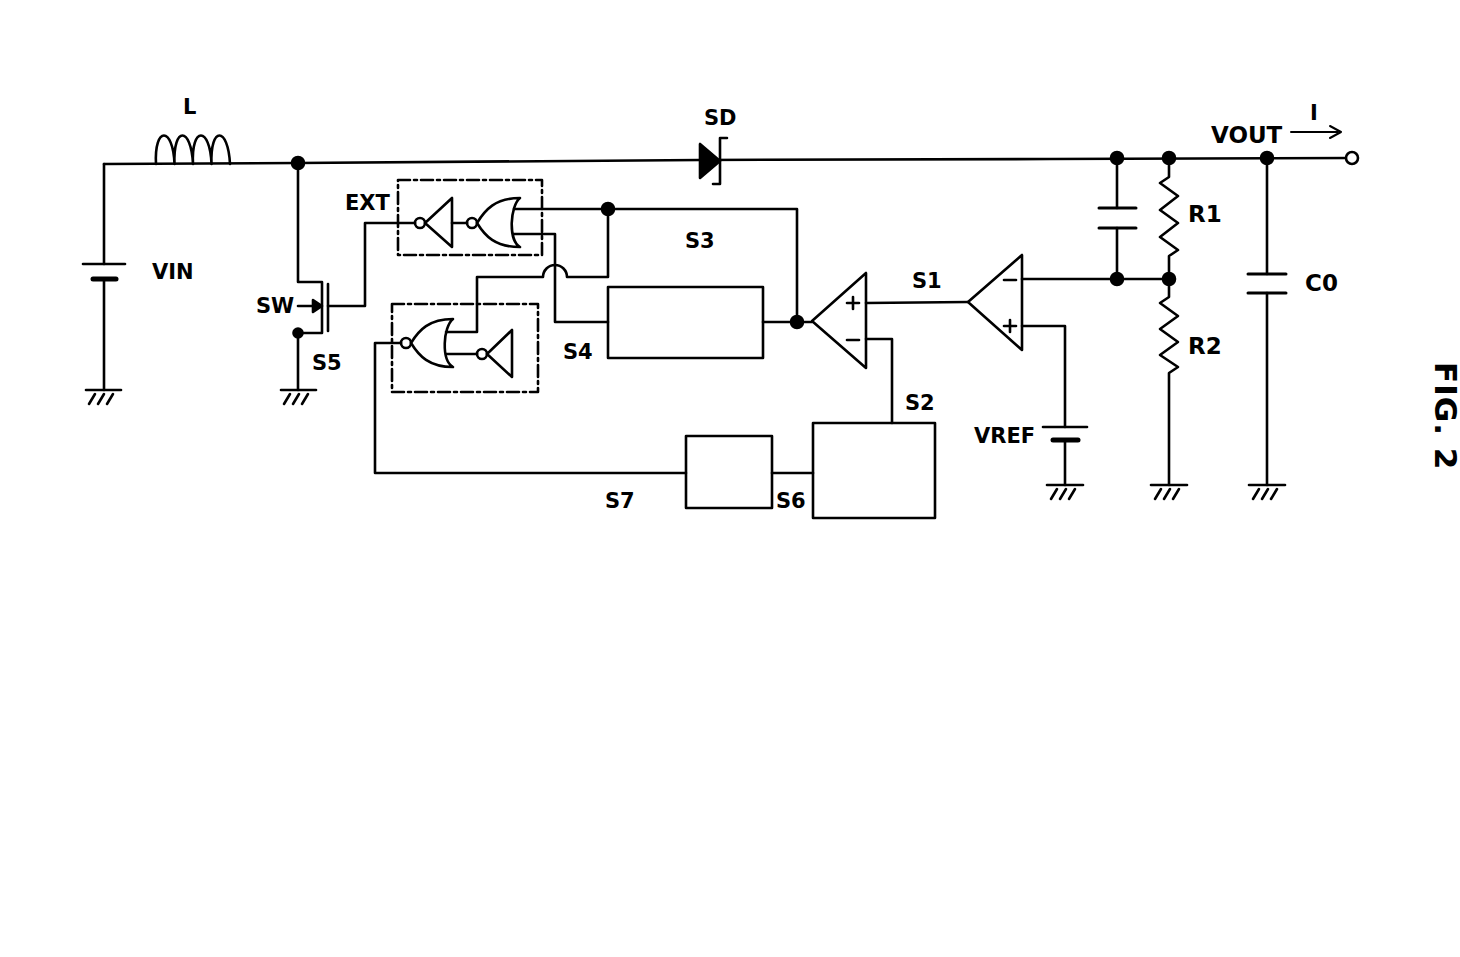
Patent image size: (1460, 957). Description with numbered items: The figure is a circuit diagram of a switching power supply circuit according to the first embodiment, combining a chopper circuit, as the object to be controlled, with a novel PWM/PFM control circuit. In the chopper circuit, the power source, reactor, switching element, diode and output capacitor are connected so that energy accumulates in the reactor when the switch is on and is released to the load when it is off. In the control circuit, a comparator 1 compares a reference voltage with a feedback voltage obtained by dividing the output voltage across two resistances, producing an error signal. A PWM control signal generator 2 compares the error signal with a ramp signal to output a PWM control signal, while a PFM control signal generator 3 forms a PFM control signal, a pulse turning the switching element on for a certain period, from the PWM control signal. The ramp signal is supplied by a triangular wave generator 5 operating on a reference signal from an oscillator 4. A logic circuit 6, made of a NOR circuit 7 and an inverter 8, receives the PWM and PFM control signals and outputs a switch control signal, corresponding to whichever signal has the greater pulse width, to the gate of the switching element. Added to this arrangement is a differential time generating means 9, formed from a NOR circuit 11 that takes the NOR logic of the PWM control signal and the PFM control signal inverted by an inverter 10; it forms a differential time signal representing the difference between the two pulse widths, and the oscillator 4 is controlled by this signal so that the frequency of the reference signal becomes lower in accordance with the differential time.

The comparator 1 is at (988, 292).
The PWM control signal generator 2 is at (832, 318).
The PFM control signal generator 3 is at (637, 344).
The oscillator 4 is at (705, 502).
The triangular wave generator 5 is at (918, 519).
The logic circuit 6 is at (490, 137).
The NOR circuit 7 is at (501, 212).
The inverter 8 is at (437, 210).
The differential time generating means 9 is at (424, 436).
The inverter 10 is at (503, 380).
The NOR circuit 11 is at (423, 346).